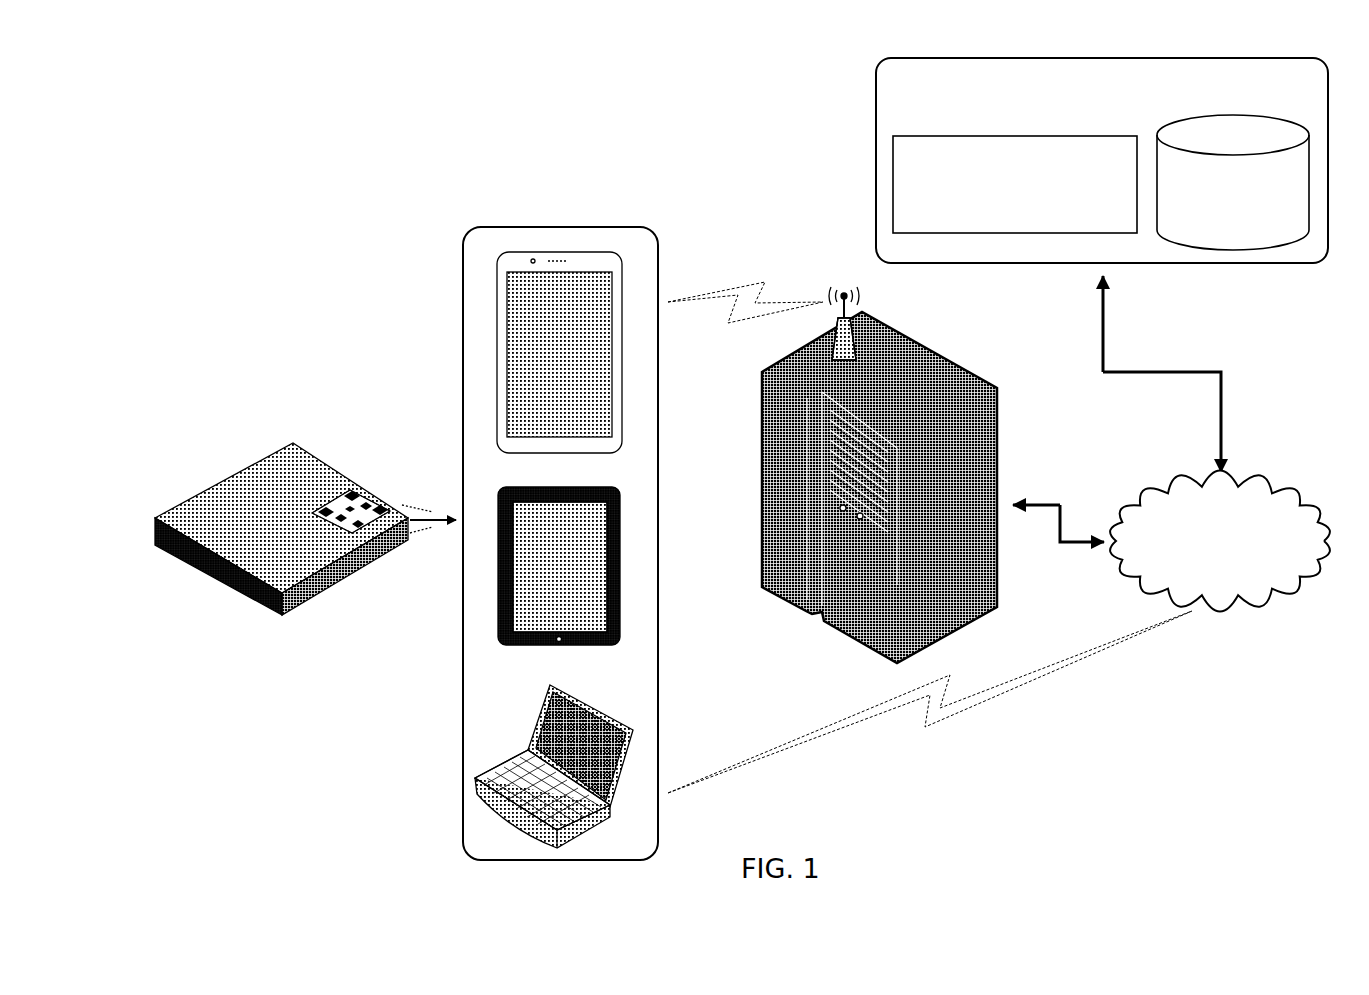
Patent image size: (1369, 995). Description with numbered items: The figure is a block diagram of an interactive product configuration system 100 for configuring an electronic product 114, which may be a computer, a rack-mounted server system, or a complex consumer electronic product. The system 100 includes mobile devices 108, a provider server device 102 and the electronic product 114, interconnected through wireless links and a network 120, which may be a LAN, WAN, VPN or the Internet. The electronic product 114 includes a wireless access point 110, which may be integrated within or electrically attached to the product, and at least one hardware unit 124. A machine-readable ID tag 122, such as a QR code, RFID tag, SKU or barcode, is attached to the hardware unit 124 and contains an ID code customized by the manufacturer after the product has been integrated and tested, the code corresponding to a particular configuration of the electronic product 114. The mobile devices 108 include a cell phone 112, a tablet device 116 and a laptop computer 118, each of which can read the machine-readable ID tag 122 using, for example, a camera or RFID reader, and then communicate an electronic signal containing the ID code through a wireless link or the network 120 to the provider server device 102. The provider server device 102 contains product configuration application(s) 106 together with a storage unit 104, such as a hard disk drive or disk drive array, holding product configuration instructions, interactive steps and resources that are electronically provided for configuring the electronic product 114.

The interactive product configuration system 100 is at (250, 158).
The provider server device 102 is at (1102, 160).
The storage unit 104 is at (1190, 128).
The product configuration application(s) 106 is at (1015, 184).
The mobile devices 108 is at (513, 227).
The wireless access point 110 is at (835, 335).
The cell phone 112 is at (602, 252).
The electronic product 114 is at (957, 367).
The tablet device 116 is at (597, 487).
The laptop computer 118 is at (593, 707).
The network 120 is at (1220, 541).
The machine-readable ID tag 122 is at (329, 501).
The hardware unit 124 is at (281, 528).